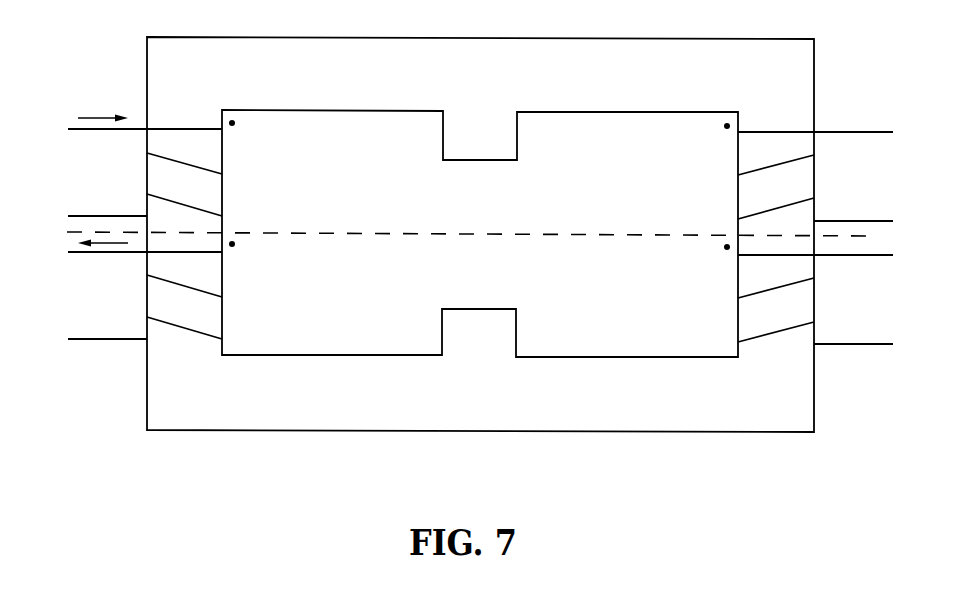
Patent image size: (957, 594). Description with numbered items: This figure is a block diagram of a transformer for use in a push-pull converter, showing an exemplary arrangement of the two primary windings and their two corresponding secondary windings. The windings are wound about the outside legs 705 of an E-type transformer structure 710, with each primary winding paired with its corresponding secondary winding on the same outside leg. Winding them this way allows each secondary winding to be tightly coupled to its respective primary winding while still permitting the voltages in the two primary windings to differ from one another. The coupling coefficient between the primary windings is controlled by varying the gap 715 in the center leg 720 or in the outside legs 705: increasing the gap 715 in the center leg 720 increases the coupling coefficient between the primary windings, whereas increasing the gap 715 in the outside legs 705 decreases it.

The outside legs 705 is at (169, 98).
The E-type transformer structure 710 is at (814, 212).
The gap 715 is at (517, 234).
The center leg 720 is at (463, 152).